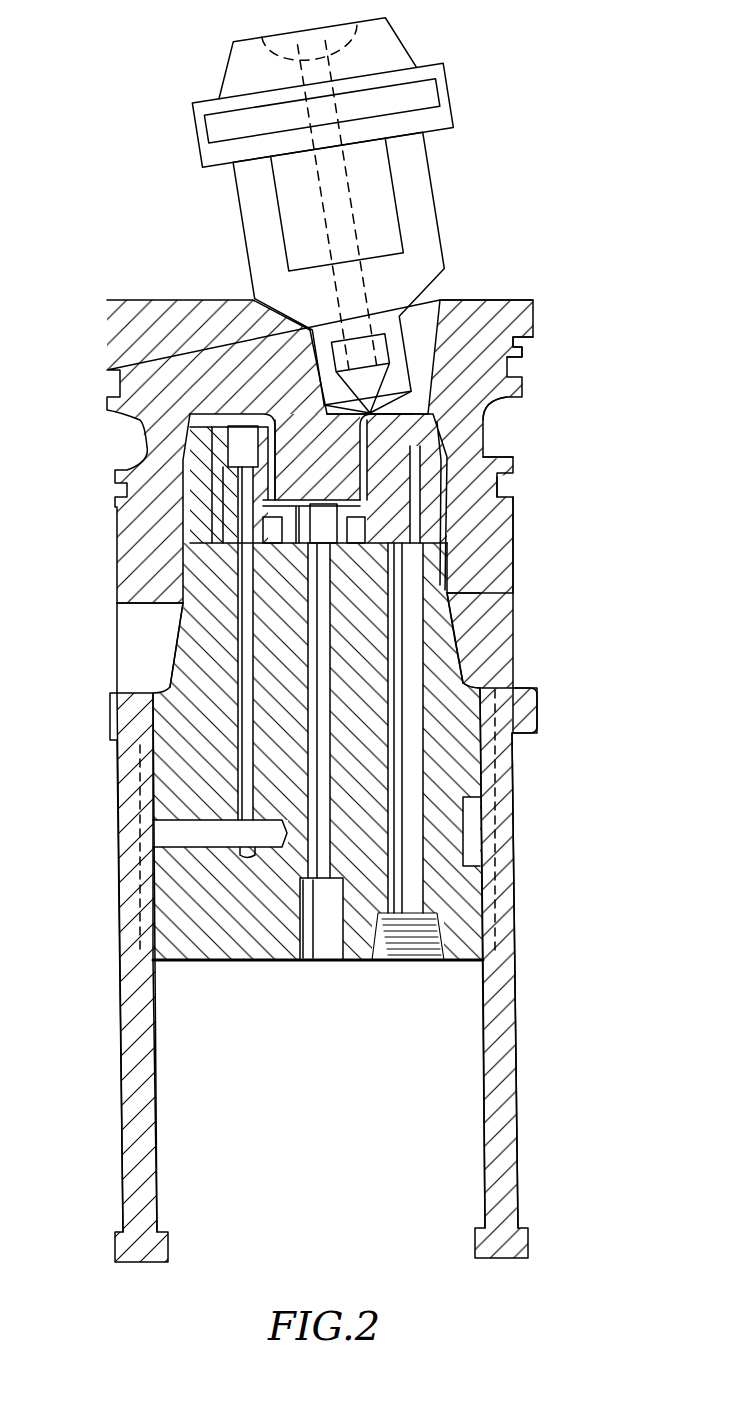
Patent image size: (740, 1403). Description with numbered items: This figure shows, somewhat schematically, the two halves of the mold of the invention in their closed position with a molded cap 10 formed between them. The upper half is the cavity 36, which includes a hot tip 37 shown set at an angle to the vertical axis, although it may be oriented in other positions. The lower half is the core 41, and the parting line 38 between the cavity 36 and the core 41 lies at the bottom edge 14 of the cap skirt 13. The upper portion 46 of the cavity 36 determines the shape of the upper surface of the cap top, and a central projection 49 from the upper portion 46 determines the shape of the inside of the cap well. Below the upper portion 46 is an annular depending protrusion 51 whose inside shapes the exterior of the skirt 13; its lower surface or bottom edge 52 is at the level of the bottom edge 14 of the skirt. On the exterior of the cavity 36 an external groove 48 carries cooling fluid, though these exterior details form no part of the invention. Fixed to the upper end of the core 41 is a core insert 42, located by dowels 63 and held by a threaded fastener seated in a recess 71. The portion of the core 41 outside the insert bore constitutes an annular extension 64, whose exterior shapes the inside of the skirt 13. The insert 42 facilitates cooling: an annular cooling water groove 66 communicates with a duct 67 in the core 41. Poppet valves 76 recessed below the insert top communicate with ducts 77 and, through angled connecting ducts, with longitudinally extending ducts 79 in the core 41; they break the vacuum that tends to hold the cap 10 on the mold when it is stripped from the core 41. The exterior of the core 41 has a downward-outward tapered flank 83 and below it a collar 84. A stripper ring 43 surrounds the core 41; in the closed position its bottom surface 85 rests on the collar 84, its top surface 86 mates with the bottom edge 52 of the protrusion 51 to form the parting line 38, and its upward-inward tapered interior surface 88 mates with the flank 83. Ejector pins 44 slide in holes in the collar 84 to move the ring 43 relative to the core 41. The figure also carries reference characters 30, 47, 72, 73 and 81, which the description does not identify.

The cap 10 is at (430, 398).
The cap skirt 13 is at (450, 520).
The bottom edge of cap skirt 14 is at (462, 607).
The injector nozzle tip 30 is at (370, 395).
The cavity 36 is at (500, 330).
The hot tip 37 is at (383, 193).
The parting line 38 is at (480, 600).
The core 41 is at (447, 768).
The core insert 42 is at (398, 465).
The stripper ring 43 is at (510, 660).
The ejector pins 44 is at (122, 1028).
The upper portion of cavity 46 is at (165, 300).
The groove 47 is at (478, 355).
The external groove 48 is at (500, 400).
The central projection 49 is at (325, 480).
The annular depending protrusion 51 is at (487, 505).
The bottom edge of protrusion 52 is at (498, 583).
The dowels 63 is at (338, 533).
The annular extension of core 64 is at (440, 480).
The annular cooling water groove 66 is at (213, 513).
The duct 67 is at (410, 727).
The recess 71 is at (296, 540).
The pin 72 is at (315, 678).
The cup 73 is at (325, 943).
The poppet valves 76 is at (245, 448).
The ducts 77 is at (243, 490).
The longitudinally extending ducts 79 is at (243, 757).
The plate 81 is at (172, 837).
The tapered flank 83 is at (473, 640).
The collar 84 is at (540, 705).
The bottom surface of stripper ring 85 is at (520, 690).
The top surface of stripper ring 86 is at (140, 603).
The upward-inward tapered surface 88 is at (470, 655).